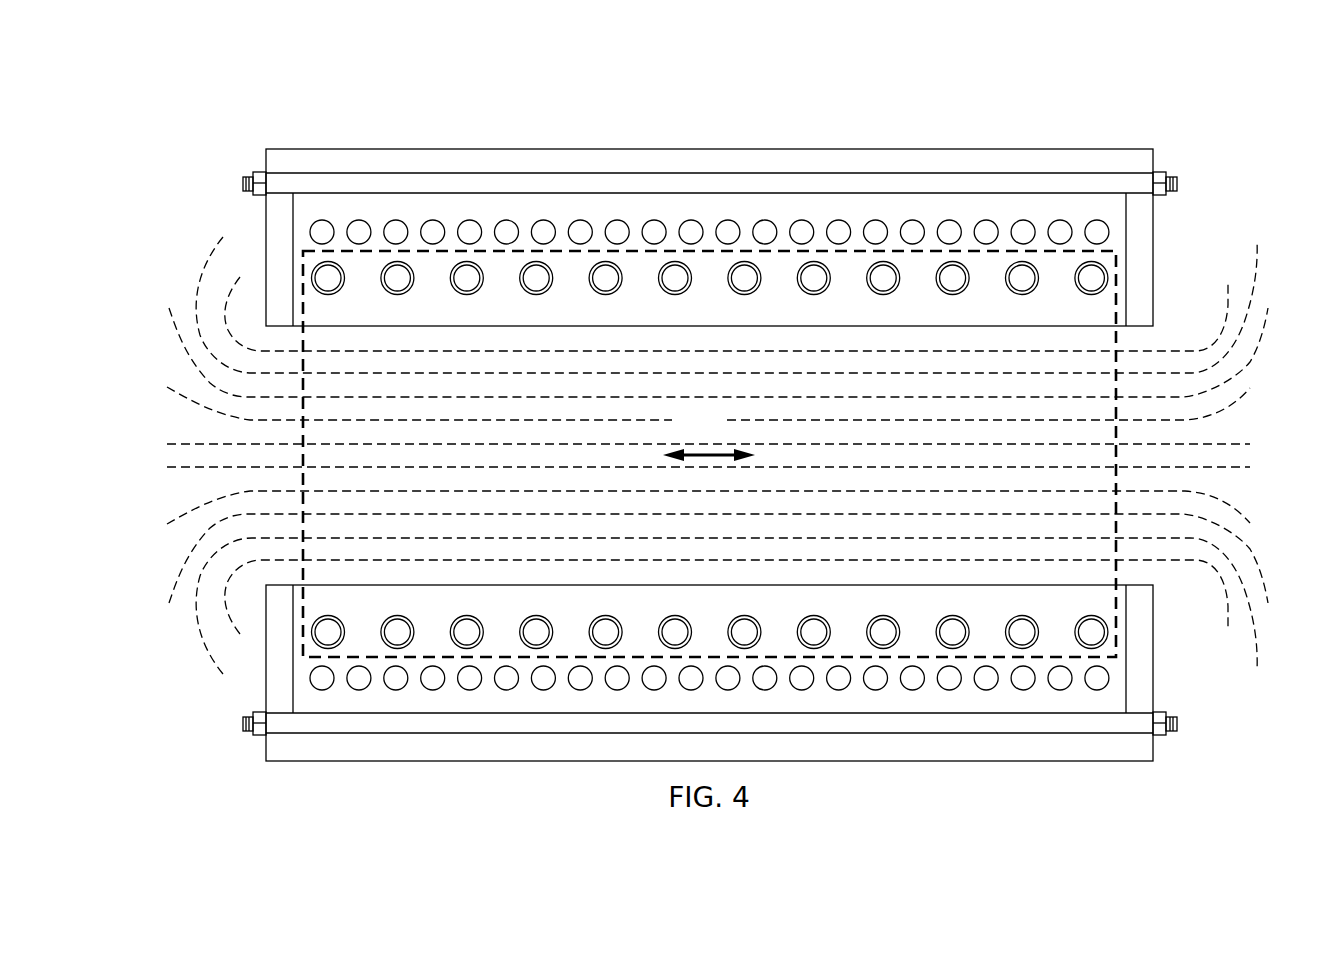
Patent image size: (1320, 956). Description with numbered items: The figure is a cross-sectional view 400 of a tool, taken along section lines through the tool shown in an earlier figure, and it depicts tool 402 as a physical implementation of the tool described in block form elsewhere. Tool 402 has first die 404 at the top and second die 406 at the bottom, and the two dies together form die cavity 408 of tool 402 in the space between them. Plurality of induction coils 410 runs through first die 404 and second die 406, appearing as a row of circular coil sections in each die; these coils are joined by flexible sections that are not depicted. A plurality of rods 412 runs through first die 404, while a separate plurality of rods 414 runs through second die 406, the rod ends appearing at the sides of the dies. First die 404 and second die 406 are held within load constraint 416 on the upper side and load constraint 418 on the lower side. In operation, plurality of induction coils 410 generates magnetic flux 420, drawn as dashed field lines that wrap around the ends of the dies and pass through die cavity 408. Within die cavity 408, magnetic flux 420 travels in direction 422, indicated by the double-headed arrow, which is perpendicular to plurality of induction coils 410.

The view 400 is at (265, 112).
The tool 402 is at (1062, 130).
The first die 404 is at (293, 240).
The second die 406 is at (293, 668).
The die cavity 408 is at (1162, 324).
The plurality of induction coils 410 is at (455, 290).
The plurality of rods 412 is at (243, 186).
The plurality of rods 414 is at (243, 724).
The load constraint 416 is at (265, 158).
The load constraint 418 is at (266, 751).
The magnetic flux 420 is at (181, 443).
The direction 422 is at (708, 452).